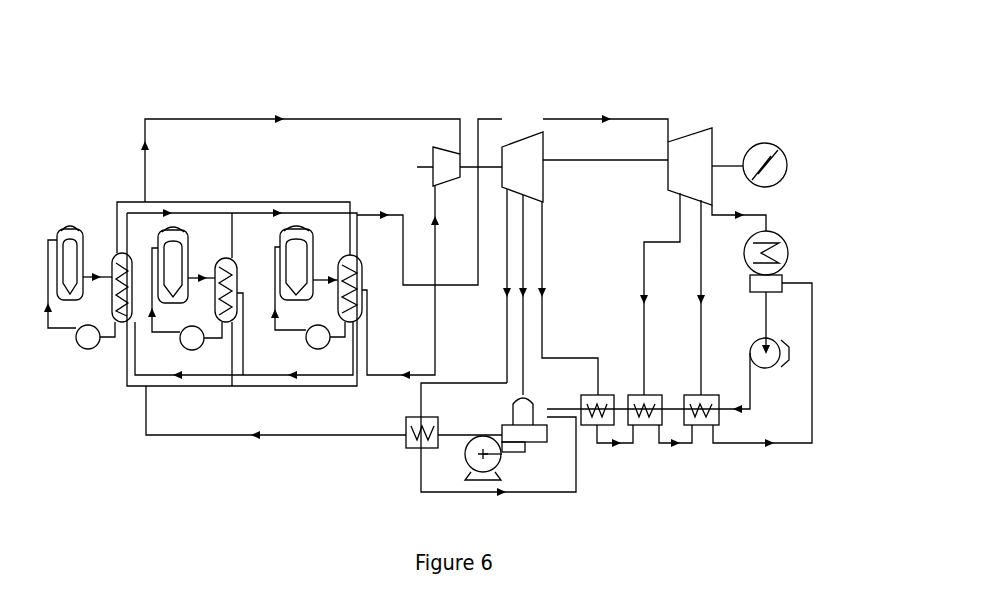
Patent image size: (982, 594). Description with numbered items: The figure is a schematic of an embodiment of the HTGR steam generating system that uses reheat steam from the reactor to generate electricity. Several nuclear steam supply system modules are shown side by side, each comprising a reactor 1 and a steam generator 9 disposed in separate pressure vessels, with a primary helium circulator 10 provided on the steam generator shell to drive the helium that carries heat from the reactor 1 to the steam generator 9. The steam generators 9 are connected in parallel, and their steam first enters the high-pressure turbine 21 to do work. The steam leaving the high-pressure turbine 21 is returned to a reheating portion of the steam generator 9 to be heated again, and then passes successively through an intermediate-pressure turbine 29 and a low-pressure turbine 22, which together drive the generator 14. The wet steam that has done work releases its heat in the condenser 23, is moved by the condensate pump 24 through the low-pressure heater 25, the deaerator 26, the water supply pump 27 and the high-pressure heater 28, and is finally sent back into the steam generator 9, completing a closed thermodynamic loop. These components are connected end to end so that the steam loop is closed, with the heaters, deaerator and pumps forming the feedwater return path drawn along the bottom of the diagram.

The reactor 1 is at (65, 226).
The steam generator 9 is at (113, 256).
The primary helium circulator 10 is at (84, 348).
The generator 14 is at (752, 148).
The high-pressure turbine 21 is at (433, 162).
The low-pressure turbine 22 is at (683, 138).
The condenser 23 is at (789, 258).
The condensate pump 24 is at (755, 345).
The low-pressure heater 25 is at (590, 428).
The deaerator 26 is at (513, 432).
The water supply pump 27 is at (501, 463).
The high-pressure heater 28 is at (407, 441).
The intermediate-pressure turbine 29 is at (525, 140).